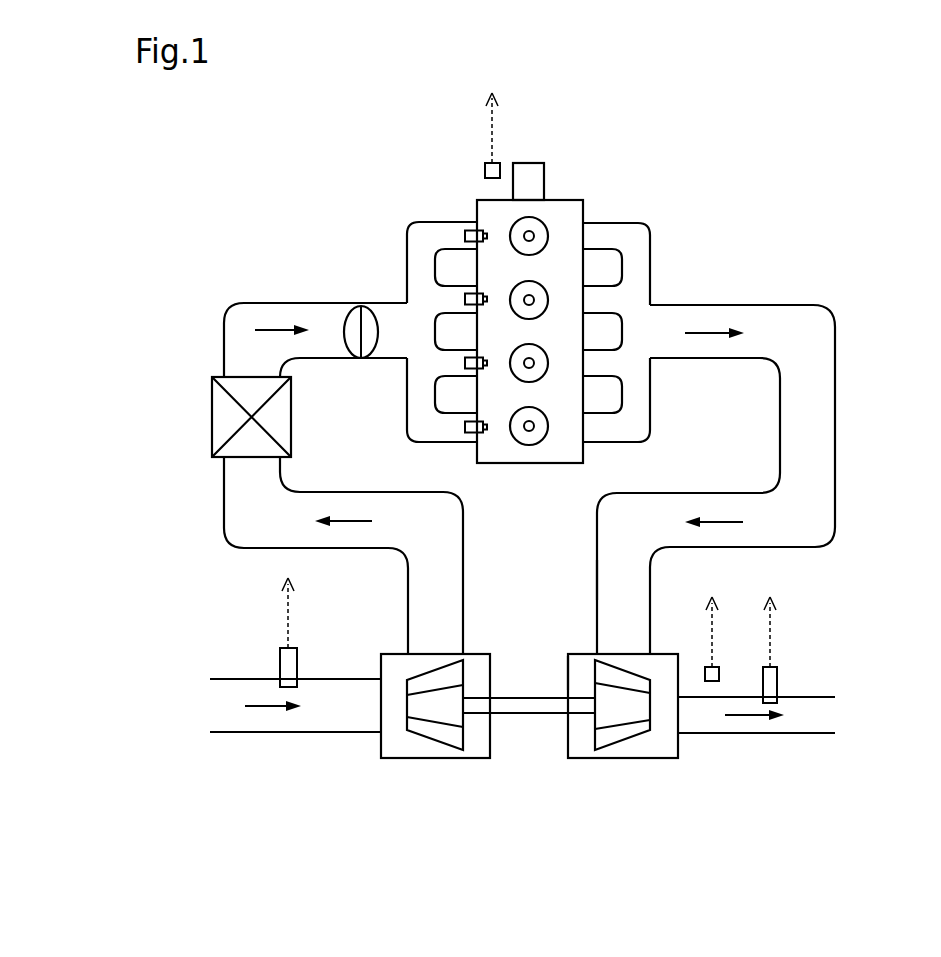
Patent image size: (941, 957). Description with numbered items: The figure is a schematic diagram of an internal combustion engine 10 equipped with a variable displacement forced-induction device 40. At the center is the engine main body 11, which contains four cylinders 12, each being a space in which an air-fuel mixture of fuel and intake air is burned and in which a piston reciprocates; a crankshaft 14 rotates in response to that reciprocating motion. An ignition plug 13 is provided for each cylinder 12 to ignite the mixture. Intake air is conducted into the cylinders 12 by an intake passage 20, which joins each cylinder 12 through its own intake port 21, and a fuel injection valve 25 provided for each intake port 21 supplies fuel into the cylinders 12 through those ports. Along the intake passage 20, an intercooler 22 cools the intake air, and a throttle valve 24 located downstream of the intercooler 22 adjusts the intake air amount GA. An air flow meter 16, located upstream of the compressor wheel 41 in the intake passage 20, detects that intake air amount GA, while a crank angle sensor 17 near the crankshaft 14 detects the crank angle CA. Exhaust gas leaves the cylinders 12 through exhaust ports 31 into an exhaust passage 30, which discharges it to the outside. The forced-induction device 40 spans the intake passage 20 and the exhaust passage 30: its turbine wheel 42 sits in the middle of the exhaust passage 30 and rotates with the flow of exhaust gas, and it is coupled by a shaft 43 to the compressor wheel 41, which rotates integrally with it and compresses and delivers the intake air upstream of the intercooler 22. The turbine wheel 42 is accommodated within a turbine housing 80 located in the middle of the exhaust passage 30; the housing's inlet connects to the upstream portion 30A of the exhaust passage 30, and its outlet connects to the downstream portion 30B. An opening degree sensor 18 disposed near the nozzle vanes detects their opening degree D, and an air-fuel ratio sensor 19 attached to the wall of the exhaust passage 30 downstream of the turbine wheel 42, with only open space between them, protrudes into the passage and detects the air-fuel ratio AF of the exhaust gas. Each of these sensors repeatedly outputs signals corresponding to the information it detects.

The internal combustion engine 10 is at (731, 247).
The engine main body 11 is at (528, 463).
The cylinder 12 is at (518, 230).
The ignition plug 13 is at (533, 232).
The crankshaft 14 is at (544, 182).
The air flow meter 16 is at (297, 668).
The crank angle sensor 17 is at (485, 173).
The opening degree sensor 18 is at (704, 672).
The air-fuel ratio sensor 19 is at (777, 685).
The intake passage 20 is at (272, 303).
The intake port 21 is at (452, 237).
The intercooler 22 is at (291, 417).
The throttle valve 24 is at (345, 326).
The fuel injection valve 25 is at (487, 240).
The exhaust passage 30 is at (835, 432).
The portion of the exhaust passage on the upstream side of the turbine housing 30A is at (597, 592).
The portion of the exhaust passage on the downstream side of the turbine housing 30B is at (770, 733).
The exhaust port 31 is at (605, 237).
The forced-induction device 40 is at (652, 830).
The compressor wheel 41 is at (432, 748).
The turbine wheel 42 is at (624, 748).
The shaft 43 is at (527, 713).
The turbine housing 80 is at (568, 666).